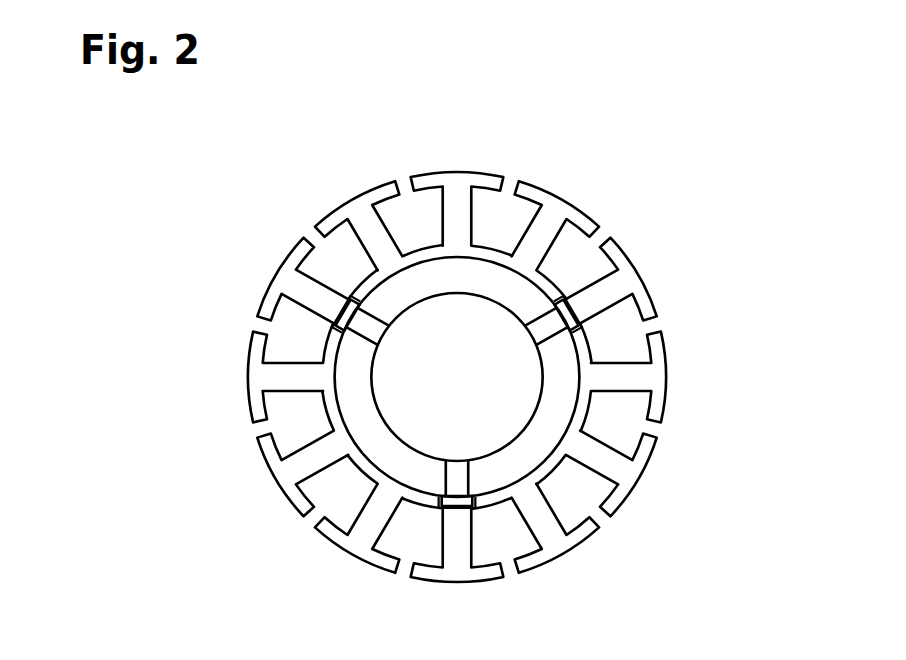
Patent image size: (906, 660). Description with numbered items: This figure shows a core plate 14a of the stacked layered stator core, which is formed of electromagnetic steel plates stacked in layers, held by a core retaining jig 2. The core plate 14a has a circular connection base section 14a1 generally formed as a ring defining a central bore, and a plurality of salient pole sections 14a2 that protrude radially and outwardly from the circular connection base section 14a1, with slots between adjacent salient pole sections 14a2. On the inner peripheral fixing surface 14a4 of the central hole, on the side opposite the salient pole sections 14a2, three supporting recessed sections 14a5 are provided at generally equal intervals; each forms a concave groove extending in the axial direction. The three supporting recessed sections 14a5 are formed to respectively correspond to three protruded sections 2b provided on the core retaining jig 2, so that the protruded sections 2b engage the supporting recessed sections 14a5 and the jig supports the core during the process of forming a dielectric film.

The core retaining jig 2 is at (470, 392).
The protruded section 2b is at (344, 305).
The core plate 14a is at (430, 405).
The circular connection base section 14a1 is at (585, 508).
The salient pole section 14a2 is at (597, 461).
The inner peripheral fixing surface 14a4 is at (347, 402).
The supporting recessed section 14a5 is at (345, 328).